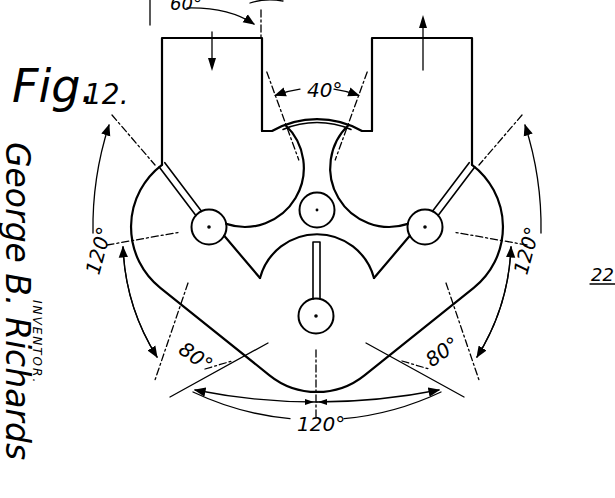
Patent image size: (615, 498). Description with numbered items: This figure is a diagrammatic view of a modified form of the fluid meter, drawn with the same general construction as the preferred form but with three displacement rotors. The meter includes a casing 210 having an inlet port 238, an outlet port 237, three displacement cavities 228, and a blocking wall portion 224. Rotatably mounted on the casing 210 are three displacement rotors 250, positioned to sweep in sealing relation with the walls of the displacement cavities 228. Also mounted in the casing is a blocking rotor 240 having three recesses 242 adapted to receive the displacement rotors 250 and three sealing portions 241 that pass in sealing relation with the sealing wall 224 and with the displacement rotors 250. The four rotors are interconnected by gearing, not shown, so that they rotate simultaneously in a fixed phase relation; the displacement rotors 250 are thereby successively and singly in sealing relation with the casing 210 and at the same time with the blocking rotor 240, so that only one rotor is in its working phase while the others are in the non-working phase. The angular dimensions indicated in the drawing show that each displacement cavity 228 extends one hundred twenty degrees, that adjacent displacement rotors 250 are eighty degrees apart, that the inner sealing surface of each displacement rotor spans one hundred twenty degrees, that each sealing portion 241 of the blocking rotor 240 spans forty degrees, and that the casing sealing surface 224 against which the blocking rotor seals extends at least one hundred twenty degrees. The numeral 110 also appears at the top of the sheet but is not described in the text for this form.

The lever (adjacent figure) 110 is at (300, 0).
The casing 210 is at (385, 399).
The blocking wall portion 224 is at (279, 130).
The displacement cavities 228 is at (148, 278).
The outlet port 237 is at (471, 70).
The inlet port 238 is at (167, 64).
The blocking rotor 240 is at (337, 167).
The sealing portions 241 is at (397, 256).
The recesses 242 is at (363, 222).
The displacement rotors 250 is at (214, 244).